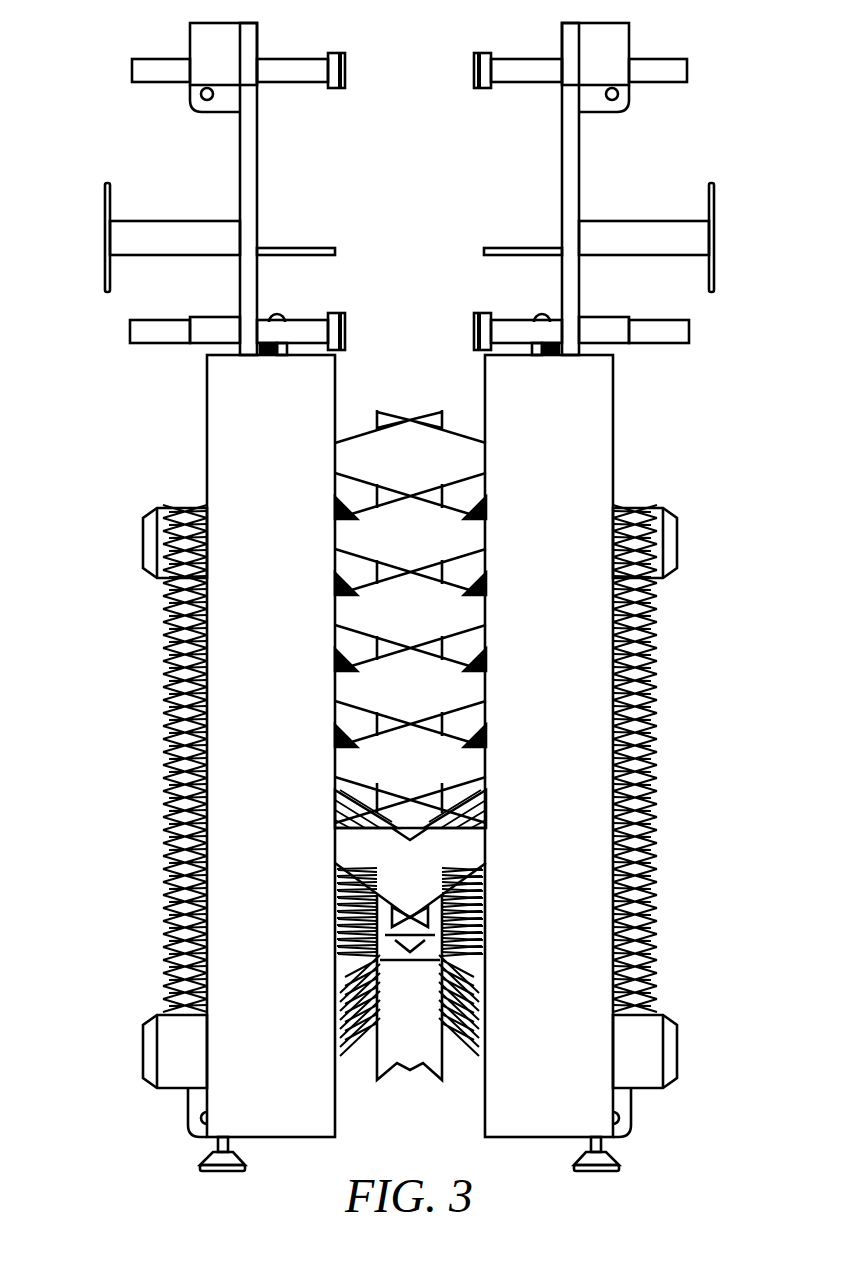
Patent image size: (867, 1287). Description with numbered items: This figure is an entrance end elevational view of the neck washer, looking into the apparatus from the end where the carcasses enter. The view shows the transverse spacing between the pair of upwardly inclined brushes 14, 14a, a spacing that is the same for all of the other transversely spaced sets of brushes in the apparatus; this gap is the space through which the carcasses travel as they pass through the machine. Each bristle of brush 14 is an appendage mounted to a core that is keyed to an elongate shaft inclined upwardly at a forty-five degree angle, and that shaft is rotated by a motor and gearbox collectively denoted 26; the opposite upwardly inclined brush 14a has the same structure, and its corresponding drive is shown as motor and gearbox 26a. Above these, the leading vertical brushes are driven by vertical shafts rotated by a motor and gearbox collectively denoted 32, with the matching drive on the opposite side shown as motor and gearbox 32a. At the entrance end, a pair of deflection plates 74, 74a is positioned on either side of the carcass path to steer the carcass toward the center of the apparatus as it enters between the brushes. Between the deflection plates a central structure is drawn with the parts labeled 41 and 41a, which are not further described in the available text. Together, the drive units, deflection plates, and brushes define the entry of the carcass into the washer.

The upwardly inclined brush 14 is at (655, 760).
The upwardly inclined brush 14a is at (180, 780).
The motor and gearbox 26 is at (675, 1050).
The lower brush cap 26a is at (150, 1053).
The motor and gearbox 32 is at (672, 540).
The upper brush cap 32a is at (150, 538).
The blade 41 is at (468, 450).
The blade edge 41a is at (357, 448).
The deflection plate 74 is at (566, 463).
The deflection plate 74a is at (288, 463).